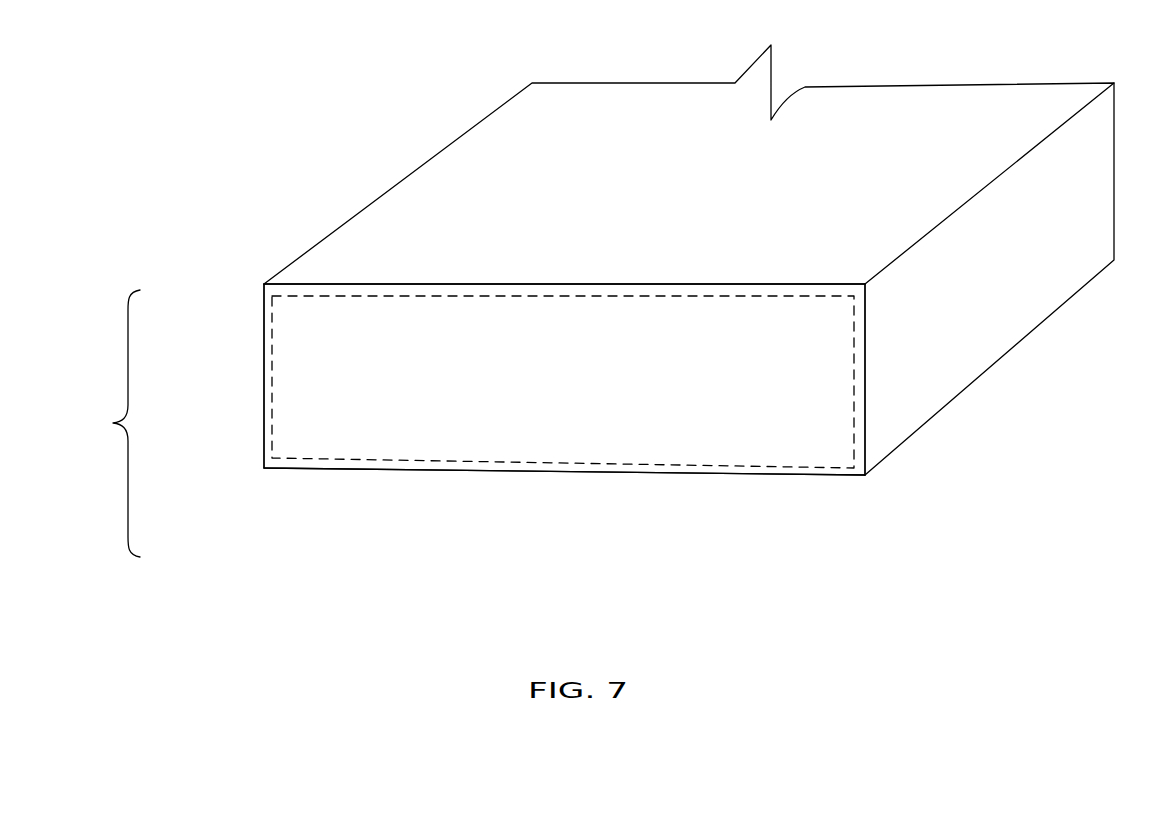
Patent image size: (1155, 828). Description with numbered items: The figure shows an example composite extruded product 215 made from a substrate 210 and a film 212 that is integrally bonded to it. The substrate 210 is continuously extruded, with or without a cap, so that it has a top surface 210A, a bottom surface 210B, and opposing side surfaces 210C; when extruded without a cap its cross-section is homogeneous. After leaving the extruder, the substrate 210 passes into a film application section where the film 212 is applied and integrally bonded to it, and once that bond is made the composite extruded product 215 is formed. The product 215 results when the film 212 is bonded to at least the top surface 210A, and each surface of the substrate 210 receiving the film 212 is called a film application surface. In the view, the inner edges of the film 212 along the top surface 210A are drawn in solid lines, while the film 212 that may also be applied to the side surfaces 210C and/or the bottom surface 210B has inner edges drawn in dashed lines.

The substrate 210 is at (723, 435).
The top surface 210A is at (526, 297).
The bottom surface 210B is at (447, 470).
The opposing side surfaces 210C is at (264, 424).
The film 212 is at (272, 313).
The composite extruded product 215 is at (98, 423).